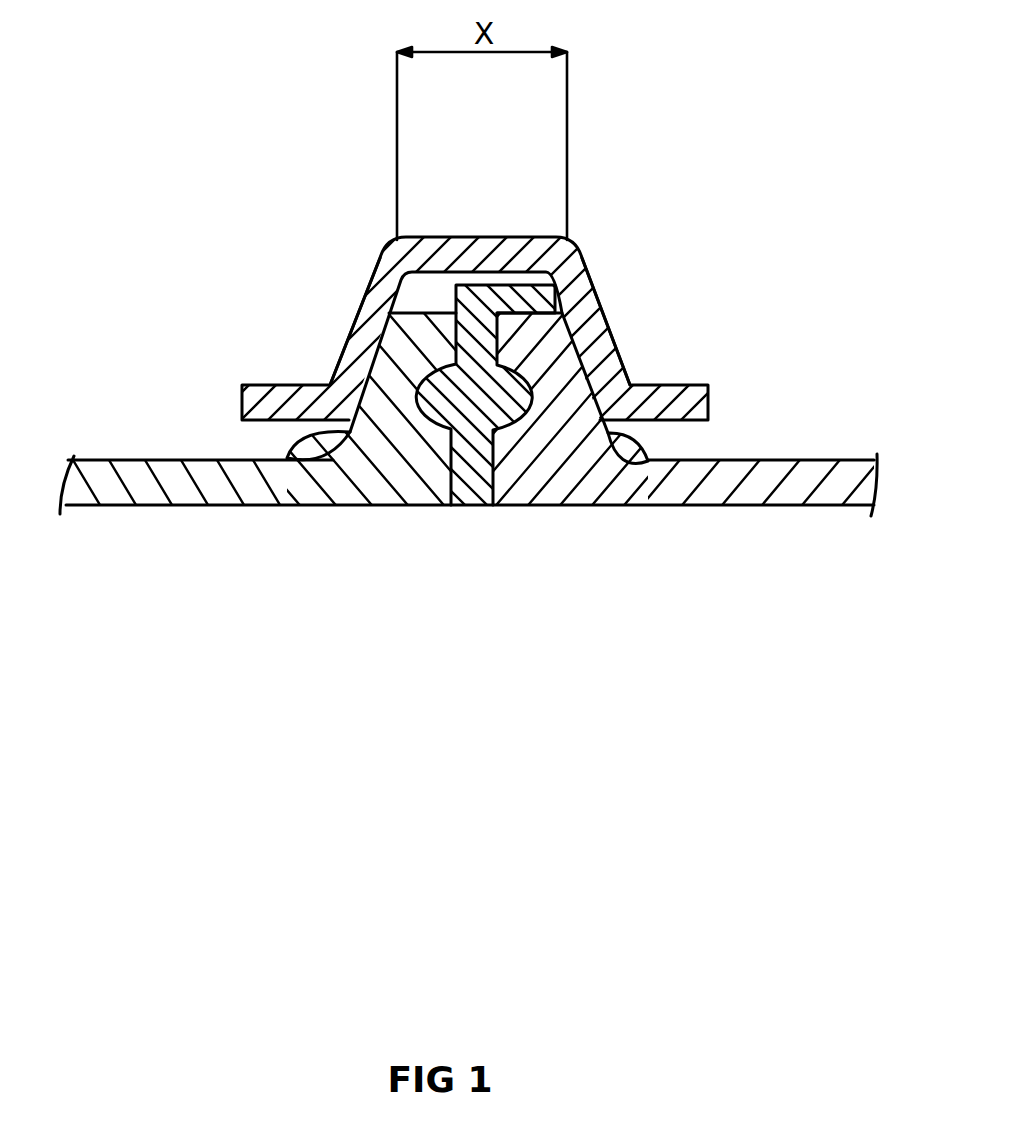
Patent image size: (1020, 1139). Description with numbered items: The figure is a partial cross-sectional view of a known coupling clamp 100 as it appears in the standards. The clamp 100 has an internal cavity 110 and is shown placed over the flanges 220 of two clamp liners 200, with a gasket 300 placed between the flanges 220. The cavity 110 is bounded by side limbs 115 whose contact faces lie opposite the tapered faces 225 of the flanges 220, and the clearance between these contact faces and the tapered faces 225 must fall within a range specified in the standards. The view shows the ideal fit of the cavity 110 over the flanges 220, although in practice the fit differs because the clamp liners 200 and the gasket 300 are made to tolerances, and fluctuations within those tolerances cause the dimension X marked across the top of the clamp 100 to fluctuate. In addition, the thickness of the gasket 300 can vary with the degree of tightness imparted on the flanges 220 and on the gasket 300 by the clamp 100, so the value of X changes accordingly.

The coupling clamp 100 is at (522, 237).
The internal cavity 110 is at (427, 290).
The side limbs 115 is at (397, 295).
The flanges 220 is at (387, 383).
The clamp liners 200 is at (227, 459).
The tapered faces 225 is at (325, 437).
The gasket 300 is at (471, 465).